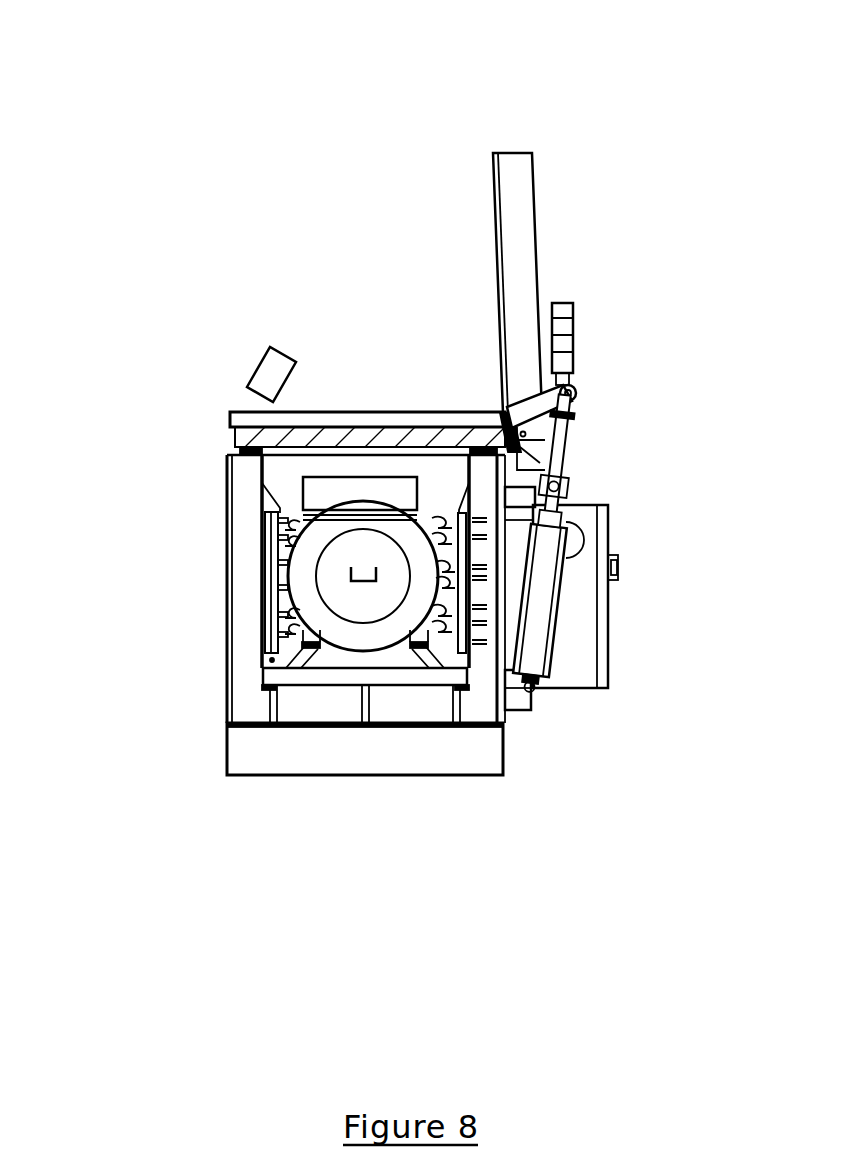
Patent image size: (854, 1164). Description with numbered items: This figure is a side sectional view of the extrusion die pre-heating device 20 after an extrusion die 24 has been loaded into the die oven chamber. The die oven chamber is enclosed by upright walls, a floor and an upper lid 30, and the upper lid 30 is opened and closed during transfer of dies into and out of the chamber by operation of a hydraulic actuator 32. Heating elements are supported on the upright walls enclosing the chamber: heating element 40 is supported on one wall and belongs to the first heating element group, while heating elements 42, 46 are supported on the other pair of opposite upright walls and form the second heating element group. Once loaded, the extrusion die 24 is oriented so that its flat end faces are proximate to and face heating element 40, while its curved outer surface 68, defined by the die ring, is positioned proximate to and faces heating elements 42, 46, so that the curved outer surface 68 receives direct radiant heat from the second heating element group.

The extrusion die pre-heating device 20 is at (676, 90).
The extrusion die 24 is at (338, 632).
The upper lid 30 is at (523, 243).
The hydraulic actuator 32 is at (552, 472).
The heating element 40 is at (435, 515).
The heating element 42 is at (503, 630).
The heating element 46 is at (263, 550).
The curved outer surface 68 is at (390, 656).